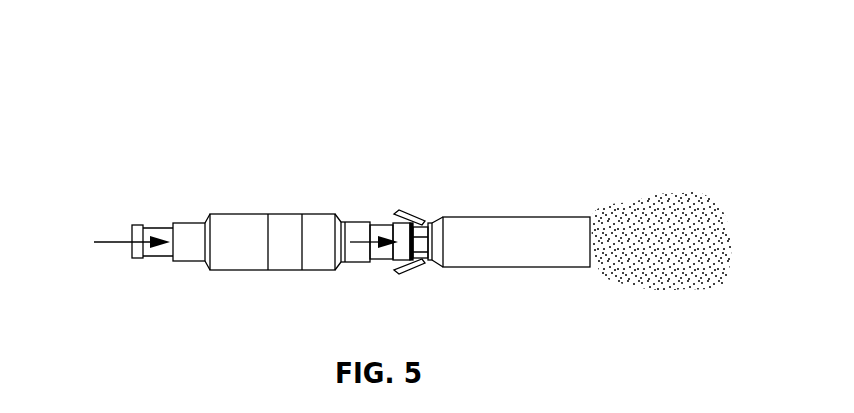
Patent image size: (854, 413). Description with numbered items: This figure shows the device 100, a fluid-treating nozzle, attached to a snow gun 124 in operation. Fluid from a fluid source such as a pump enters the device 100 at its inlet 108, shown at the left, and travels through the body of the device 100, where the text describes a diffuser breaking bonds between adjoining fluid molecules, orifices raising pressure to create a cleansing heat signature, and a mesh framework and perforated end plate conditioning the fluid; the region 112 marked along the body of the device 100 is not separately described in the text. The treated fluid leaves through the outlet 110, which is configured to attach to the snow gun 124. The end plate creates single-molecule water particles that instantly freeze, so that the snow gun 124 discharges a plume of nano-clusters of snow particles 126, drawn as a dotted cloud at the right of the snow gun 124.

The device 100 is at (136, 100).
The inlet 108 is at (105, 242).
The outlet 110 is at (362, 245).
The body sections 112 is at (302, 272).
The snow gun 124 is at (510, 217).
The snow particles 126 is at (663, 210).